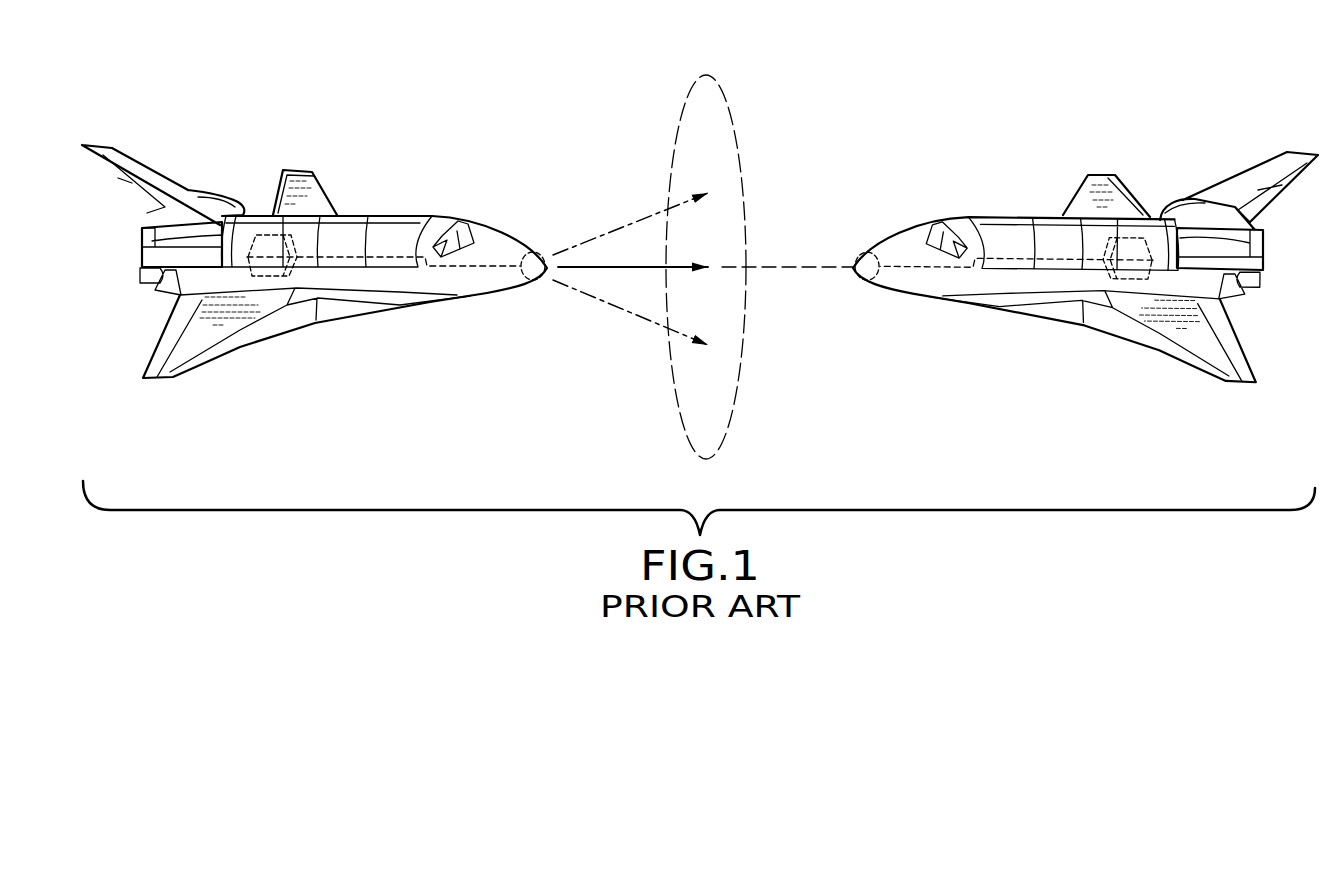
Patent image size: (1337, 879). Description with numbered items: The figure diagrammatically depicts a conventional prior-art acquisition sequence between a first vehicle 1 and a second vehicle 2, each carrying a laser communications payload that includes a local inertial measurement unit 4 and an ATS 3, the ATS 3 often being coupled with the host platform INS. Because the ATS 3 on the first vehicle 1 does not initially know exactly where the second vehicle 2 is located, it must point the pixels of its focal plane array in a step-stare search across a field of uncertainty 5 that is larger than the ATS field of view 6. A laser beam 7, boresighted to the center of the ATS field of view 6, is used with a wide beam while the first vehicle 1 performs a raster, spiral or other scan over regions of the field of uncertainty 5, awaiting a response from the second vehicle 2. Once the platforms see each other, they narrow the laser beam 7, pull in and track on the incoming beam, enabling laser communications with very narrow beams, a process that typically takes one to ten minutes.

The first vehicle 1 is at (403, 212).
The second vehicle 2 is at (999, 212).
The ATS 3 is at (538, 284).
The local inertial measurement unit 4 is at (262, 241).
The field of uncertainty 5 is at (703, 76).
The ATS field of view 6 is at (618, 224).
The laser beam 7 is at (643, 266).